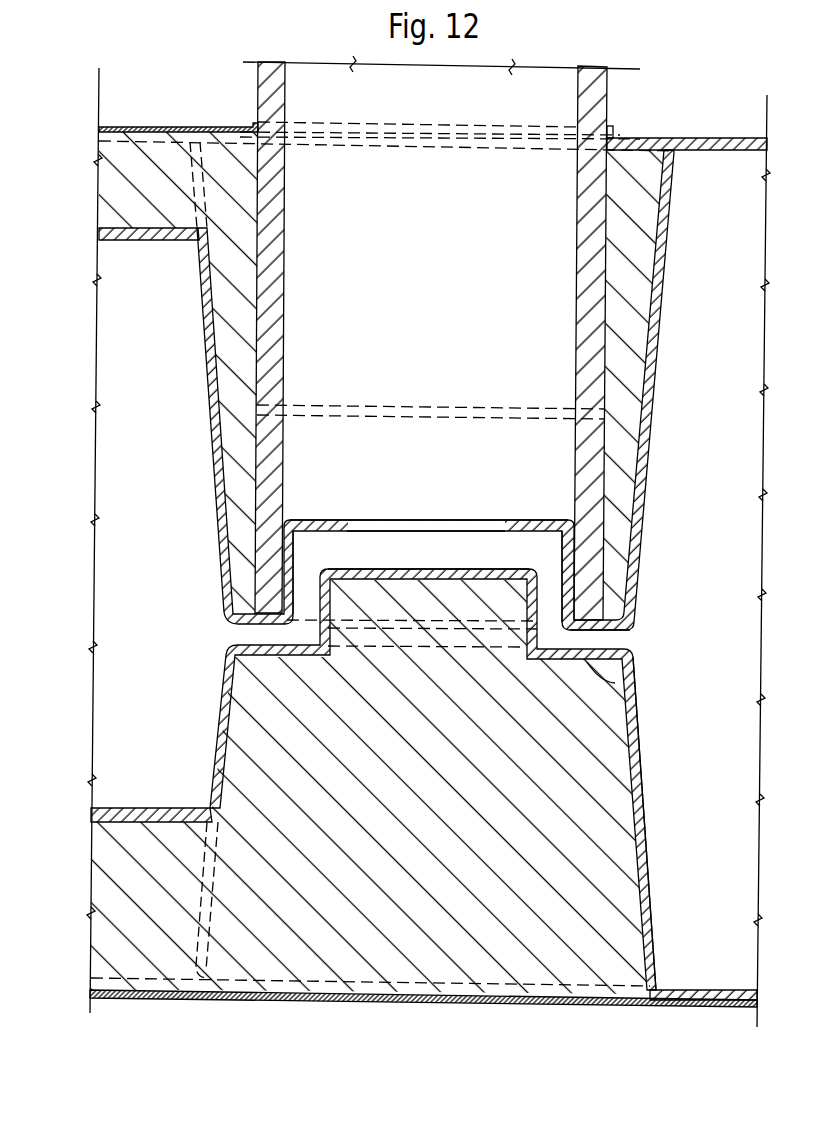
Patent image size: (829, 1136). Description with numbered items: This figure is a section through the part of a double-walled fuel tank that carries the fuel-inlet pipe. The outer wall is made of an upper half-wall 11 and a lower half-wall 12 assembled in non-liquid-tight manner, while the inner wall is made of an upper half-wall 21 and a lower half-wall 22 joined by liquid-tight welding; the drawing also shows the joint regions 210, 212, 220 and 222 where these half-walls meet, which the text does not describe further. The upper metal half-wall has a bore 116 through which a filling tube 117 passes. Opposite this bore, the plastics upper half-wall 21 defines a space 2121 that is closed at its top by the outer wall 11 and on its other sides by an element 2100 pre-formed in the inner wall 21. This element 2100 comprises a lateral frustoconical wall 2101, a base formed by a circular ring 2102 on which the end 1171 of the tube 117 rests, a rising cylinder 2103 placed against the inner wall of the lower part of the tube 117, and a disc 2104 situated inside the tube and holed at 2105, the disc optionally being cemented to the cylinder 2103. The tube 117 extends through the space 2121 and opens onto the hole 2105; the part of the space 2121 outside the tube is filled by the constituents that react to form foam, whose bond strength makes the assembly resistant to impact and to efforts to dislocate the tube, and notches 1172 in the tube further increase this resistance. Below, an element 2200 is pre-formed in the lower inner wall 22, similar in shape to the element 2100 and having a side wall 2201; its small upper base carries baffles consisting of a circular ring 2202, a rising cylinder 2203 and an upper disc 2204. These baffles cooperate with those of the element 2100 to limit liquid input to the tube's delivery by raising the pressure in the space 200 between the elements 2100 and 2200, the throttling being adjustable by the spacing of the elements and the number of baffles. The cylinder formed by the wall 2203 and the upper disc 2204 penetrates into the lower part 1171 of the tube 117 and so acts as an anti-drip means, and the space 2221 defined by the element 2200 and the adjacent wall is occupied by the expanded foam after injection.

The upper half-wall 11 is at (653, 138).
The lower half-wall 12 is at (562, 1008).
The upper half-wall 21 is at (150, 236).
The lower half-wall 22 is at (152, 808).
The bore 116 is at (585, 132).
The filling tube 117 is at (272, 105).
The space 200 is at (571, 582).
The mounting plate 210 is at (150, 140).
The filling body 212 is at (140, 183).
The mounting plate 220 is at (732, 990).
The filling body 222 is at (128, 878).
The end of the tube 1171 is at (592, 606).
The notches 1172 is at (600, 412).
The element 2100 is at (656, 453).
The lateral frustoconical wall 2101 is at (205, 300).
The circular ring 2102 is at (605, 616).
The rising cylinder 2103 is at (292, 585).
The disc 2104 is at (318, 524).
The hole 2105 is at (455, 527).
The space 2121 is at (630, 373).
The element 2200 is at (650, 818).
The lower shell side wall 2201 is at (652, 790).
The circular ring 2202 is at (615, 683).
The rising cylinder 2203 is at (300, 625).
The upper disc 2204 is at (406, 569).
The space 2221 is at (585, 855).